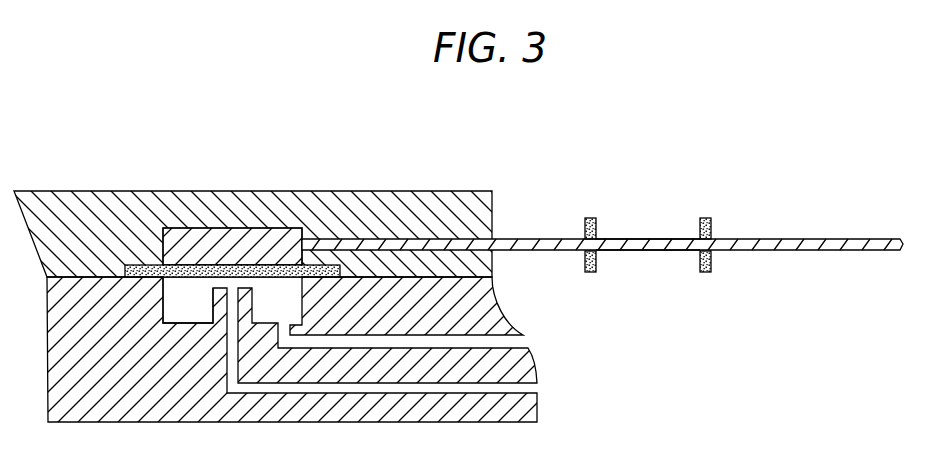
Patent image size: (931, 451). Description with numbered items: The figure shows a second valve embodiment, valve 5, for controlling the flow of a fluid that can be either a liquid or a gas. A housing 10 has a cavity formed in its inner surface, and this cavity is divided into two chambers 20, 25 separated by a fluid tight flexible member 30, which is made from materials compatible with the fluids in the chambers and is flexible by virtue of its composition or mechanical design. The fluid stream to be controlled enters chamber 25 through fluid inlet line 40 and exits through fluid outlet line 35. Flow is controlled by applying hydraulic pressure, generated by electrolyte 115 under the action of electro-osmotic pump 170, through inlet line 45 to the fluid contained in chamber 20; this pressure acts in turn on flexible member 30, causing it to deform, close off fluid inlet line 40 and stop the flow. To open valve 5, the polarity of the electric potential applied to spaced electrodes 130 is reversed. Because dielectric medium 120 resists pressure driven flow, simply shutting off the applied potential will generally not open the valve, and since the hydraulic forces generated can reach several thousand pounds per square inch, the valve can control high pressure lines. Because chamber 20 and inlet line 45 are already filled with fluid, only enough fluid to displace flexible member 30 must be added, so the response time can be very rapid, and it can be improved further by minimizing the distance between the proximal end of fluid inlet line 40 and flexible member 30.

The valve 5 is at (384, 134).
The housing 10 is at (125, 197).
The chamber 20 is at (284, 233).
The chamber 25 is at (163, 309).
The flexible member 30 is at (199, 259).
The fluid outlet line 35 is at (530, 341).
The fluid inlet line 40 is at (540, 389).
The inlet line 45 is at (432, 241).
The electrolyte 115 is at (529, 240).
The dielectric medium 120 is at (625, 240).
The spaced electrodes 130 is at (706, 272).
The electro-osmotic pump 170 is at (659, 166).